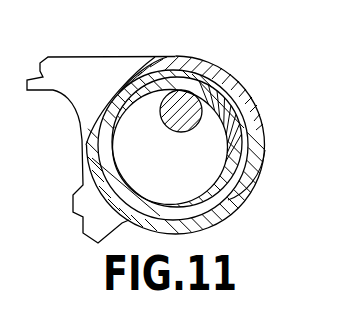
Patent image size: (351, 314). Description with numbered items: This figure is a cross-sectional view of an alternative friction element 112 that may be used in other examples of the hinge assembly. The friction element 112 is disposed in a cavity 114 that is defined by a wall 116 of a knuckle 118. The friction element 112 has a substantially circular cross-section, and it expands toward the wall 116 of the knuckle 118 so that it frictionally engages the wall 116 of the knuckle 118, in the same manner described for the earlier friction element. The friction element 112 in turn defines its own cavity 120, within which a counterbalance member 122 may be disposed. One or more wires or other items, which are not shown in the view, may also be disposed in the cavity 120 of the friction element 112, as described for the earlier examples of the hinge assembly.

The friction element 112 is at (225, 197).
The cavity 114 is at (205, 151).
The wall 116 is at (155, 204).
The knuckle 118 is at (252, 102).
The cavity 120 is at (133, 131).
The counterbalance member 122 is at (157, 57).